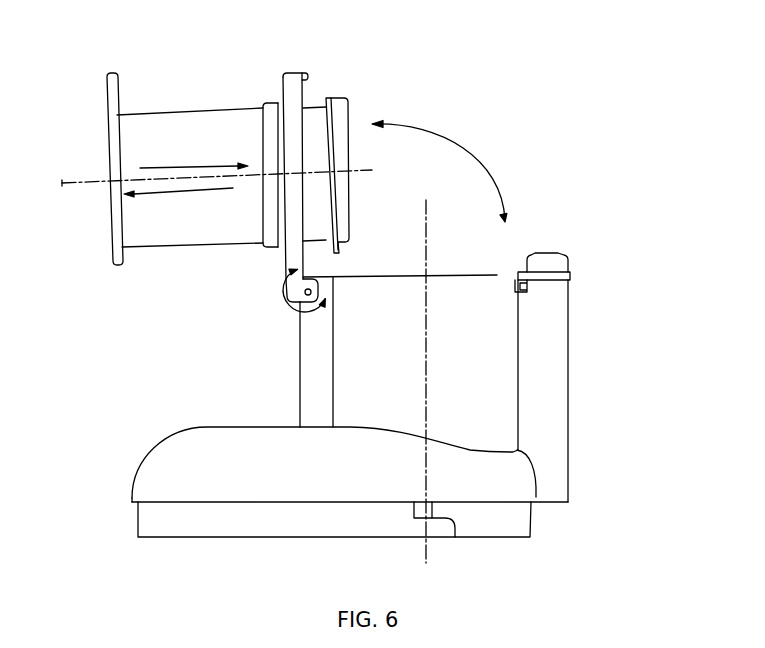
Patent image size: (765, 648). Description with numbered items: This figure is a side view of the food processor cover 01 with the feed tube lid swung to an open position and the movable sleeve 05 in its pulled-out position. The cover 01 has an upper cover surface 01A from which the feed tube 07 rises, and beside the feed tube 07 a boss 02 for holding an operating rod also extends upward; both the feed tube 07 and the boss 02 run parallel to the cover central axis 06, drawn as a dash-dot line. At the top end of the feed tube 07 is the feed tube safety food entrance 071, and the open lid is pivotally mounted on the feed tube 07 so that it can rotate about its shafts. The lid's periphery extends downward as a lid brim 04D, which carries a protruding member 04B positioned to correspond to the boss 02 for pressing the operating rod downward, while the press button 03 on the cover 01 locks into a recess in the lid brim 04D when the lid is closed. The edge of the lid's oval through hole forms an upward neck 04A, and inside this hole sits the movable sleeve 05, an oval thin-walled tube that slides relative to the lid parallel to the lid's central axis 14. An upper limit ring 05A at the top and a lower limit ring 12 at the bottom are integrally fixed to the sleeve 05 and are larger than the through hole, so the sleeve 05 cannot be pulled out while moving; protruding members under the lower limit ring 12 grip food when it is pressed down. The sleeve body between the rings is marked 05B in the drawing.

The central axis of the feed tube lid 14 is at (63, 182).
The upper limit ring 05A is at (110, 73).
The spool drum body 05B is at (173, 123).
The movable sleeve 05 is at (213, 97).
The upward neck 04A is at (263, 107).
The protruding member 04B is at (303, 78).
The lid brim 04D is at (293, 265).
The lower limit ring 12 is at (337, 103).
The cover central axis 06 is at (443, 342).
The feed tube safety food entrance 071 is at (497, 275).
The feed tube 07 is at (487, 352).
The press button 03 is at (557, 263).
The boss 02 is at (543, 299).
The upper cover surface 01A is at (195, 442).
The food processor cover 01 is at (299, 464).